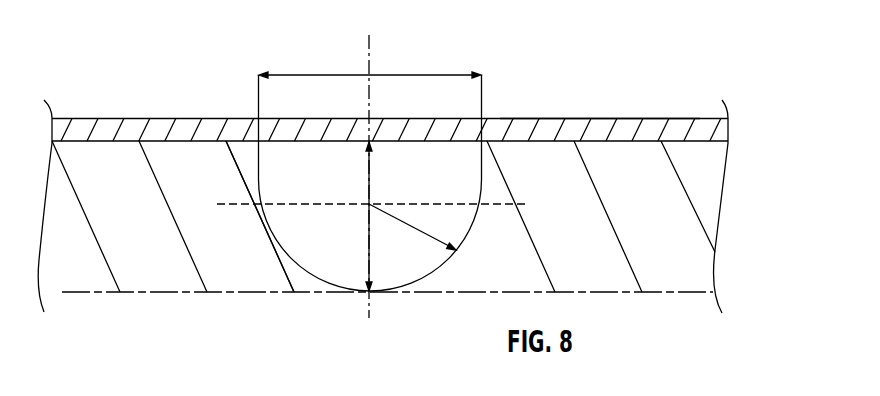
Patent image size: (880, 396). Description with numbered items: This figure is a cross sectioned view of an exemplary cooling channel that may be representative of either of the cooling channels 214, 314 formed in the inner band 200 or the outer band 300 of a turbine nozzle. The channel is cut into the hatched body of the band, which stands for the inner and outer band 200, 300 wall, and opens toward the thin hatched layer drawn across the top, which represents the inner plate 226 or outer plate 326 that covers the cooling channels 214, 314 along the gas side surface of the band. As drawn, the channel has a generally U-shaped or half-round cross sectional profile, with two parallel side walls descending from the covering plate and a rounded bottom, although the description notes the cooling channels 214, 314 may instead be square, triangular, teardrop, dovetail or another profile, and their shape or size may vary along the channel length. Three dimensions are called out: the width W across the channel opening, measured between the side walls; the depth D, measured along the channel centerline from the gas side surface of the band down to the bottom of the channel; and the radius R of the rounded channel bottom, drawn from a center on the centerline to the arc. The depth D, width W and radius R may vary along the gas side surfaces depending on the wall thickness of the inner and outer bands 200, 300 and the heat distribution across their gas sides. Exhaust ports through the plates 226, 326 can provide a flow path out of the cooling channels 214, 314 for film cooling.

The inner band 200 is at (667, 172).
The outer band 300 is at (683, 218).
The cooling channel 214 is at (250, 167).
The cooling channel 314 is at (240, 193).
The inner plate 226 is at (554, 111).
The outer plate 326 is at (628, 111).
The width W is at (394, 75).
The depth D is at (368, 218).
The radius R is at (417, 225).